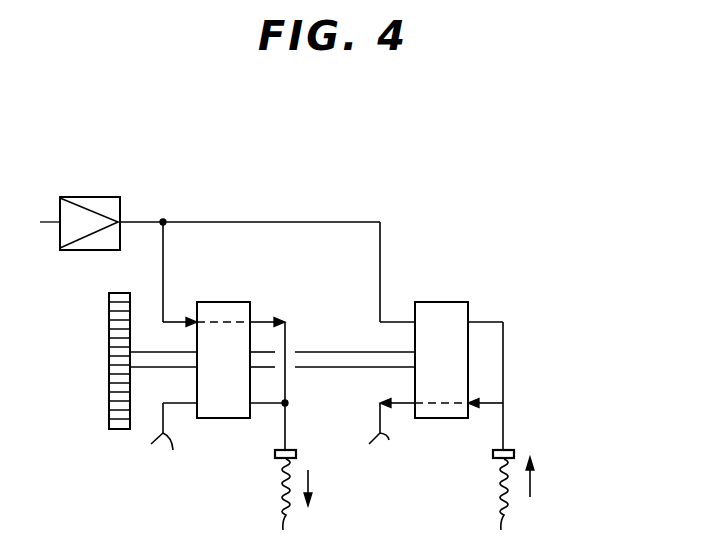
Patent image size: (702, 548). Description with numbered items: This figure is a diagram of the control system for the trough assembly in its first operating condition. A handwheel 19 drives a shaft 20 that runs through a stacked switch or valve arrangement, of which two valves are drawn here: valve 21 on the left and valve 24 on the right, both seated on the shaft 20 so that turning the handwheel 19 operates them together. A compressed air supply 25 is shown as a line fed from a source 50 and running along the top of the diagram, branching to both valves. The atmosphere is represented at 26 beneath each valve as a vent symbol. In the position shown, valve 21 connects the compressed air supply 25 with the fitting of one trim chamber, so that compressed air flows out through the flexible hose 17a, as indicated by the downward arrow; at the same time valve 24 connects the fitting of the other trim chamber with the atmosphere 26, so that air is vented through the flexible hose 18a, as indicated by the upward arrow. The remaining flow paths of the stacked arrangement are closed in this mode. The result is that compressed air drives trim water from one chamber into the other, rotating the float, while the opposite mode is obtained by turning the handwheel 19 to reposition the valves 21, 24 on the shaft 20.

The pressure source / pump 50 is at (126, 177).
The compressed air supply 25 is at (374, 200).
The handwheel 19 is at (110, 349).
The shaft 20 is at (144, 360).
The valve 21 is at (222, 322).
The valve 24 is at (446, 403).
The atmosphere 26 is at (283, 443).
The flexible hose 17a is at (290, 518).
The flexible hose 18a is at (508, 518).